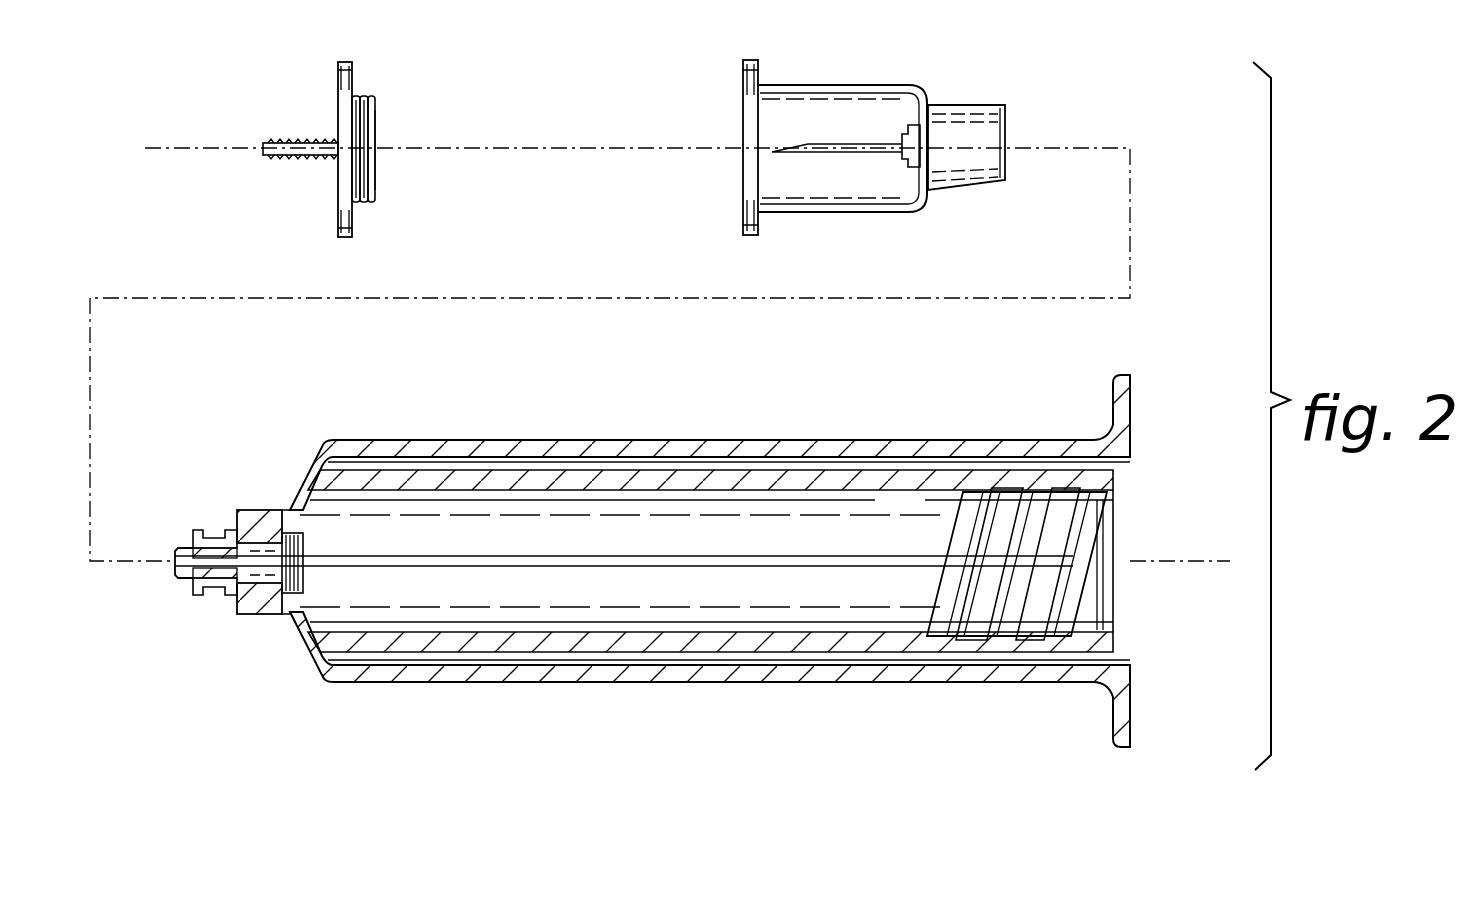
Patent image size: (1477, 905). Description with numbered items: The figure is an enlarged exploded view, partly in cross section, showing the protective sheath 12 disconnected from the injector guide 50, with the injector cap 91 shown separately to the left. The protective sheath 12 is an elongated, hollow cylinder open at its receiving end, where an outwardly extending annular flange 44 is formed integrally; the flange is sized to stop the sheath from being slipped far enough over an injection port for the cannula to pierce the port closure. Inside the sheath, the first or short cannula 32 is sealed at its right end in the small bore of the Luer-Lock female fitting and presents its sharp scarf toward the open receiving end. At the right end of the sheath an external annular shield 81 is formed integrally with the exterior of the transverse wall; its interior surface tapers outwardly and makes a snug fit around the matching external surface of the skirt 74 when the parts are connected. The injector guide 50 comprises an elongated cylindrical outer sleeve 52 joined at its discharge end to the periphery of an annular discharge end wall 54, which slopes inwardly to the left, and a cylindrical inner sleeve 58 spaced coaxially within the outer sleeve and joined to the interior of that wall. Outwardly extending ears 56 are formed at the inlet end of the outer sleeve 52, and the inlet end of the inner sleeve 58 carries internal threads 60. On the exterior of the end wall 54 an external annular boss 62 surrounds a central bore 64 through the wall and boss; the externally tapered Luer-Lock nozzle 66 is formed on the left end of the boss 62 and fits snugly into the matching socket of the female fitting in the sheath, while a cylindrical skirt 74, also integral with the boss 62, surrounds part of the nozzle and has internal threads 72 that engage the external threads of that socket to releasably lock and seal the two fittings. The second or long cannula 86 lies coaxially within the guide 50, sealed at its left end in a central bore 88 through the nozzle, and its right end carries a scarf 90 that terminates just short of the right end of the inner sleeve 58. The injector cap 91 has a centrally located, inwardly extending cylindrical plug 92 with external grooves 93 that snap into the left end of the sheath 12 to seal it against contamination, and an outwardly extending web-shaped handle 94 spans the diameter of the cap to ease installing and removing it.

The protective sheath 12 is at (843, 86).
The first cannula 32 is at (805, 145).
The annular flange 44 is at (755, 64).
The injector guide 50 is at (648, 561).
The outer sleeve 52 is at (772, 443).
The annular discharge end wall 54 is at (310, 620).
The ears 56 is at (1128, 718).
The inner sleeve 58 is at (624, 472).
The internal threads 60 is at (960, 497).
The external annular boss 62 is at (260, 508).
The central bore 64 is at (303, 547).
The Luer-Lock nozzle 66 is at (173, 574).
The internal threads 72 is at (193, 588).
The cylindrical skirt 74 is at (222, 528).
The external annular shield 81 is at (950, 104).
The second cannula 86 is at (683, 568).
The central bore 88 is at (175, 552).
The scarf 90 is at (1078, 562).
The injector cap 91 is at (338, 80).
The plug 92 is at (376, 130).
The external grooves 93 is at (372, 97).
The handle 94 is at (268, 156).